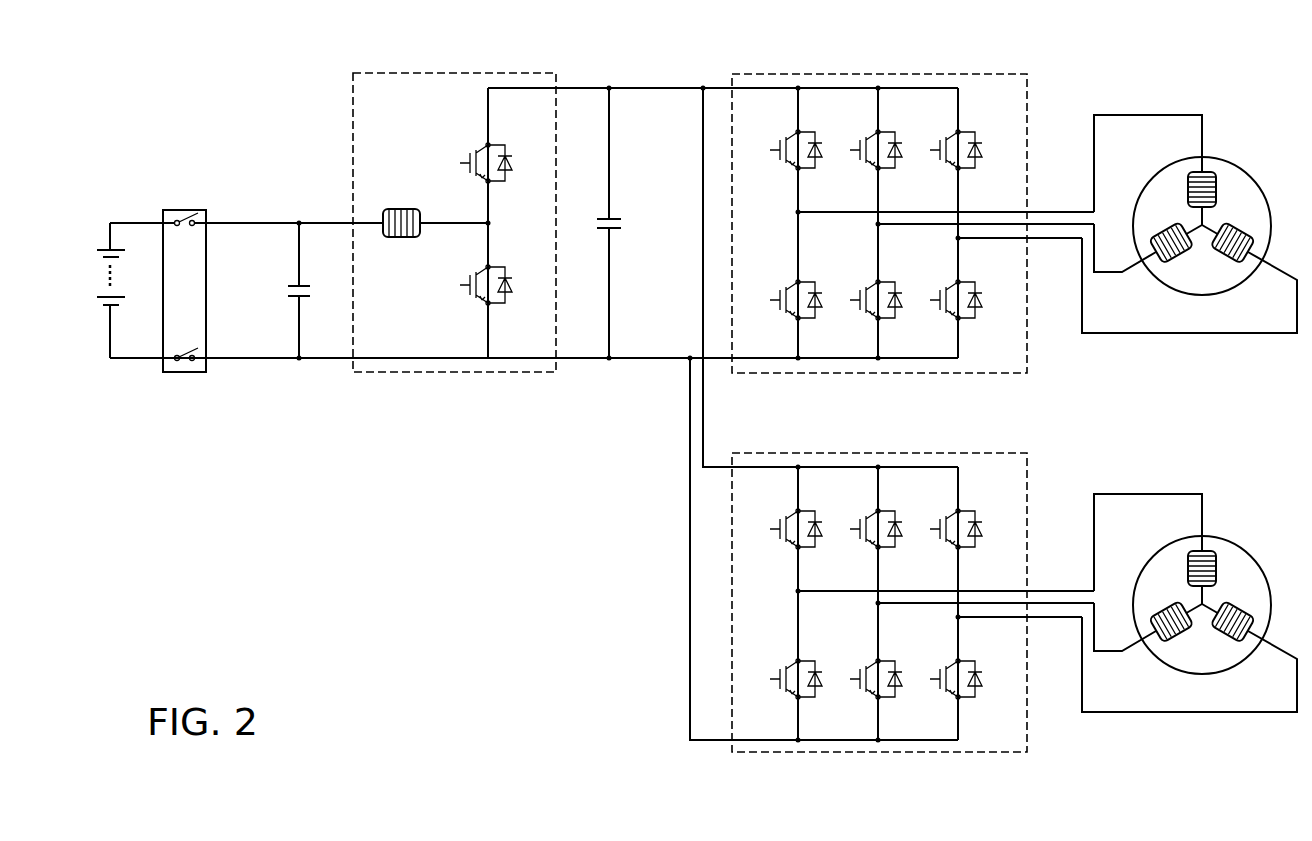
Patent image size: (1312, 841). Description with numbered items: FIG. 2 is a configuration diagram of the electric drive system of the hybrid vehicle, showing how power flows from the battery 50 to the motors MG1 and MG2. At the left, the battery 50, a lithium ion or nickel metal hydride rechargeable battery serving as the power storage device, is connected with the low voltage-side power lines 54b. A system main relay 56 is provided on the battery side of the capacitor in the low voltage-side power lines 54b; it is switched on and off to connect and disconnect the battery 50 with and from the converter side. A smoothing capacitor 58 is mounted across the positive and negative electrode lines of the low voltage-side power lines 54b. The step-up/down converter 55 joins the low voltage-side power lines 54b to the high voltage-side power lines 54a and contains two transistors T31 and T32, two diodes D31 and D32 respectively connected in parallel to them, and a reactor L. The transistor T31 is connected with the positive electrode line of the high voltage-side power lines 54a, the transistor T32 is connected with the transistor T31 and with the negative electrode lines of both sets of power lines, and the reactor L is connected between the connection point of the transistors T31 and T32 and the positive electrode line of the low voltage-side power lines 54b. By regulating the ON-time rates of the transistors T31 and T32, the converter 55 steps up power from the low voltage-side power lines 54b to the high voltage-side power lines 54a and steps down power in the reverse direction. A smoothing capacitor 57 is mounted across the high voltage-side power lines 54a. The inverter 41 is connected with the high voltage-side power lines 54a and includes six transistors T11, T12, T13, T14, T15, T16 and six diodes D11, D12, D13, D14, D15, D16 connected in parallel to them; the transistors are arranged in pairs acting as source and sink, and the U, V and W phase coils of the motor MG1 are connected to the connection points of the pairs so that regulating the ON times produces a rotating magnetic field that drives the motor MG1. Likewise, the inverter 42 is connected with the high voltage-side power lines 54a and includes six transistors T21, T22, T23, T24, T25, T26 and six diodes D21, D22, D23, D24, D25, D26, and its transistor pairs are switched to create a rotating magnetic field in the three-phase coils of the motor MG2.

The battery 50 is at (102, 230).
The system main relay 56 is at (185, 210).
The low voltage-side power lines 54b is at (262, 230).
The smoothing capacitor 58 is at (303, 283).
The step-up/down converter 55 is at (449, 72).
The reactor L is at (402, 208).
The transistor T31 is at (461, 147).
The transistor T32 is at (461, 269).
The diode D31 is at (514, 179).
The diode D32 is at (514, 301).
The smoothing capacitor 57 is at (617, 217).
The high voltage-side power lines 54a is at (677, 90).
The inverter 41 is at (877, 72).
The inverter 42 is at (877, 451).
The transistor T11 is at (770, 134).
The transistor T12 is at (851, 134).
The transistor T13 is at (931, 134).
The transistor T14 is at (770, 284).
The transistor T15 is at (851, 284).
The transistor T16 is at (931, 284).
The diode D11 is at (823, 167).
The diode D12 is at (903, 167).
The diode D13 is at (983, 167).
The diode D14 is at (823, 317).
The diode D15 is at (903, 317).
The diode D16 is at (983, 317).
The transistor T21 is at (770, 513).
The transistor T22 is at (851, 513).
The transistor T23 is at (931, 513).
The transistor T24 is at (770, 663).
The transistor T25 is at (851, 663).
The transistor T26 is at (931, 663).
The diode D21 is at (823, 546).
The diode D22 is at (903, 546).
The diode D23 is at (983, 546).
The diode D24 is at (823, 696).
The diode D25 is at (903, 696).
The diode D26 is at (983, 696).
The motor MG1 is at (1233, 160).
The motor MG2 is at (1233, 539).